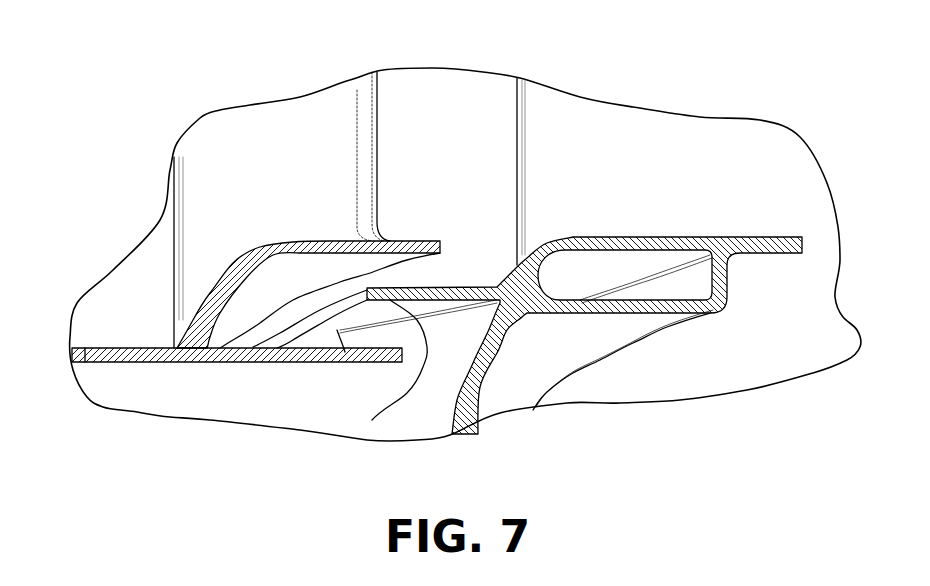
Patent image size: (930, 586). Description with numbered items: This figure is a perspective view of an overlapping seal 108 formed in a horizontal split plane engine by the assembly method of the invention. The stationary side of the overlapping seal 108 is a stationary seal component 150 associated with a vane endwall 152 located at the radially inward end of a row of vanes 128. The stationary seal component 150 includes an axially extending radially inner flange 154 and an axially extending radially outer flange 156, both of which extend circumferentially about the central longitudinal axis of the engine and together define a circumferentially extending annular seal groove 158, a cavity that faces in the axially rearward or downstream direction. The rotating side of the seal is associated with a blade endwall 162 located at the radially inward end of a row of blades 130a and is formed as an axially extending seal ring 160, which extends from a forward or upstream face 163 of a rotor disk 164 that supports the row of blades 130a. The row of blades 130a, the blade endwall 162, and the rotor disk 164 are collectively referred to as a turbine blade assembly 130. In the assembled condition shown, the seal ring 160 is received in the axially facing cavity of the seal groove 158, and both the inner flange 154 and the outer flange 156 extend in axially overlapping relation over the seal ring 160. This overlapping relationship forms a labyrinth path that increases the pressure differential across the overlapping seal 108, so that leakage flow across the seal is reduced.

The overlapping seal 108 is at (453, 322).
The row of vanes 128 is at (260, 173).
The turbine blade assembly 130 is at (510, 232).
The row of blades 130a is at (627, 177).
The stationary seal component 150 is at (200, 349).
The vane endwall 152 is at (138, 348).
The radially inner flange 154 is at (280, 360).
The radially outer flange 156 is at (417, 240).
The annular seal groove 158 is at (343, 362).
The seal ring 160 is at (372, 420).
The blade endwall 162 is at (743, 241).
The upstream face 163 is at (457, 370).
The rotor disk 164 is at (718, 352).